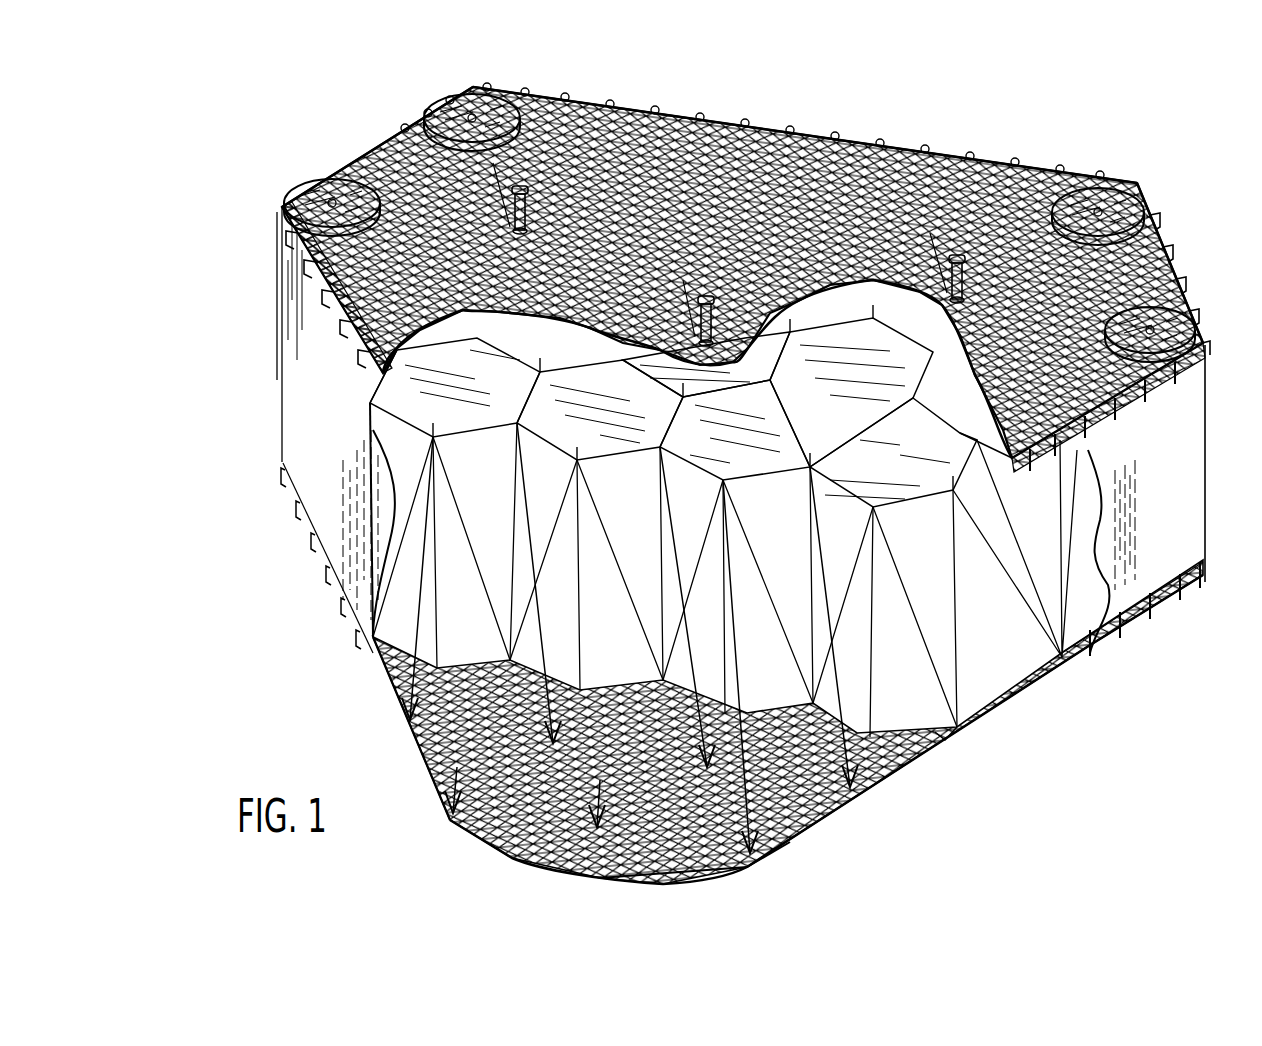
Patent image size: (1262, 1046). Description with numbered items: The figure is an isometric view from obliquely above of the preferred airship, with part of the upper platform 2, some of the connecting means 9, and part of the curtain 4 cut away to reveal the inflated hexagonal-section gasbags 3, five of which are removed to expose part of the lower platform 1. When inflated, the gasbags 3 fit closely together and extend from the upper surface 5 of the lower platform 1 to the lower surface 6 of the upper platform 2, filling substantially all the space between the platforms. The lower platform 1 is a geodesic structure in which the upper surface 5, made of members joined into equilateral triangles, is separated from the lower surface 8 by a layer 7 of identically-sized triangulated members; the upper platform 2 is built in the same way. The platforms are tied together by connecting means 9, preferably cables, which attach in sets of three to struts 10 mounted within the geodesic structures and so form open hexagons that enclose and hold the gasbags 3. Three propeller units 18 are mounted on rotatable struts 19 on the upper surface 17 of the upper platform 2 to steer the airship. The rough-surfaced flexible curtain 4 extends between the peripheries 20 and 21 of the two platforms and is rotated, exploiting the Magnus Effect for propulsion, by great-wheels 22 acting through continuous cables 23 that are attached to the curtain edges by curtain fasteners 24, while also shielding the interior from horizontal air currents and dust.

The lower platform 1 is at (898, 776).
The upper platform 2 is at (385, 140).
The gasbags 3 is at (942, 740).
The curtain 4 is at (1202, 500).
The upper surface 5 is at (846, 800).
The lower surface 6 is at (1143, 363).
The layer 7 is at (806, 830).
The lower surface 8 is at (763, 858).
The connecting means 9 is at (860, 565).
The struts 10 is at (452, 808).
The upper surface 17 is at (868, 185).
The propeller units 18 is at (525, 188).
The struts 19 is at (540, 205).
The periphery 20 is at (1080, 658).
The periphery 21 is at (600, 106).
The great-wheels 22 is at (1100, 200).
The continuous cables 23 is at (1186, 292).
The curtain fasteners 24 is at (1183, 273).